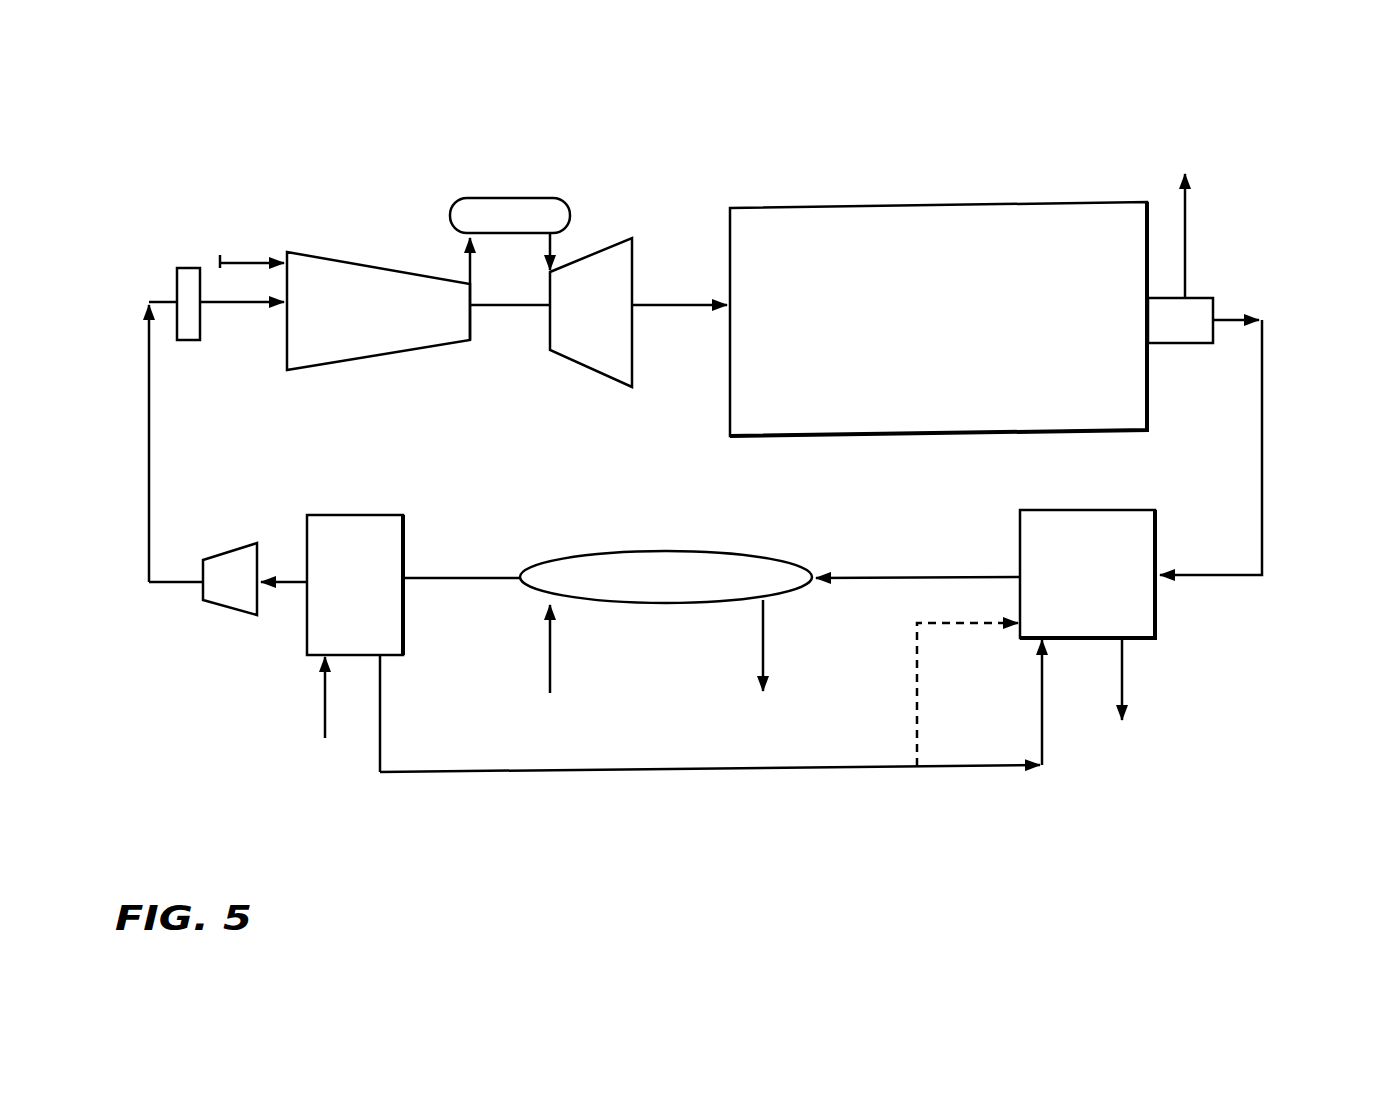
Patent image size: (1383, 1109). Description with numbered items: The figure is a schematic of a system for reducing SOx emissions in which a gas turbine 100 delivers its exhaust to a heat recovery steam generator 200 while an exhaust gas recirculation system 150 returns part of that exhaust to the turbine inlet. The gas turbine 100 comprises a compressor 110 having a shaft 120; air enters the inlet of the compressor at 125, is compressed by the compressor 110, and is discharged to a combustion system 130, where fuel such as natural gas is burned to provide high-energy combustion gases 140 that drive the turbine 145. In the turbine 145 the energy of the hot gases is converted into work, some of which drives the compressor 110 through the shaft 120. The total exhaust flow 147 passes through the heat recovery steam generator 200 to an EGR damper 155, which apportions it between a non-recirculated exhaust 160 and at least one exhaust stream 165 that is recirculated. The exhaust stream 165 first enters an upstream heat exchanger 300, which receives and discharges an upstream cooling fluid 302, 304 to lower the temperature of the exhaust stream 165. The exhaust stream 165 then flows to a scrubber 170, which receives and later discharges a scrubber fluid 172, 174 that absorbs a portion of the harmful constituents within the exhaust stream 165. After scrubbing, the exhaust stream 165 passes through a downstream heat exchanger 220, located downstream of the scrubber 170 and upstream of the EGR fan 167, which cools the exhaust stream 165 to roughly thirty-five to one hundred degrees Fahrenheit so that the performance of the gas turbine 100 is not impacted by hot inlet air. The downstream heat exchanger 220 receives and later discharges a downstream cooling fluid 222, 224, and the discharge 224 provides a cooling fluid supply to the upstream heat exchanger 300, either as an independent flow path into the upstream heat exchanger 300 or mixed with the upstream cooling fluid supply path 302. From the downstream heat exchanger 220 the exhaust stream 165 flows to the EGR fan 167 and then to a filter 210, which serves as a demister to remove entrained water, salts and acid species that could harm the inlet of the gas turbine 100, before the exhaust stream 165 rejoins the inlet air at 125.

The gas turbine 100 is at (190, 188).
The compressor 110 is at (375, 327).
The shaft 120 is at (508, 307).
The compressor inlet 125 is at (467, 268).
The combustion system 130 is at (517, 198).
The combustion gases 140 is at (554, 243).
The turbine 145 is at (620, 331).
The total exhaust flow 147 is at (663, 310).
The exhaust gas recirculation system 150 is at (1242, 734).
The EGR damper 155 is at (1205, 337).
The non-recirculated exhaust 160 is at (1189, 216).
The exhaust stream 165 is at (160, 301).
The EGR fan 167 is at (220, 603).
The scrubber 170 is at (692, 594).
The scrubber fluid 172 is at (554, 671).
The scrubber fluid 174 is at (745, 825).
The heat recovery steam generator 200 is at (955, 335).
The filter 210 is at (177, 287).
The downstream heat exchanger 220 is at (385, 596).
The downstream cooling fluid 222 is at (320, 717).
The discharge of downstream cooling fluid 224 is at (373, 755).
The upstream heat exchanger 300 is at (1113, 588).
The upstream cooling fluid supply path 302 is at (1040, 700).
The upstream cooling fluid discharge 304 is at (1124, 704).